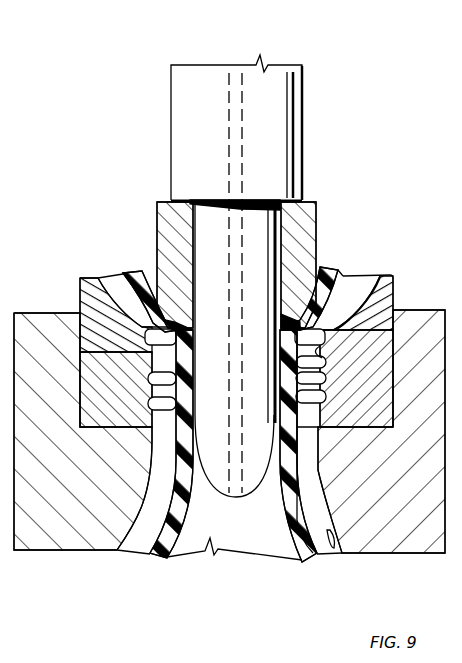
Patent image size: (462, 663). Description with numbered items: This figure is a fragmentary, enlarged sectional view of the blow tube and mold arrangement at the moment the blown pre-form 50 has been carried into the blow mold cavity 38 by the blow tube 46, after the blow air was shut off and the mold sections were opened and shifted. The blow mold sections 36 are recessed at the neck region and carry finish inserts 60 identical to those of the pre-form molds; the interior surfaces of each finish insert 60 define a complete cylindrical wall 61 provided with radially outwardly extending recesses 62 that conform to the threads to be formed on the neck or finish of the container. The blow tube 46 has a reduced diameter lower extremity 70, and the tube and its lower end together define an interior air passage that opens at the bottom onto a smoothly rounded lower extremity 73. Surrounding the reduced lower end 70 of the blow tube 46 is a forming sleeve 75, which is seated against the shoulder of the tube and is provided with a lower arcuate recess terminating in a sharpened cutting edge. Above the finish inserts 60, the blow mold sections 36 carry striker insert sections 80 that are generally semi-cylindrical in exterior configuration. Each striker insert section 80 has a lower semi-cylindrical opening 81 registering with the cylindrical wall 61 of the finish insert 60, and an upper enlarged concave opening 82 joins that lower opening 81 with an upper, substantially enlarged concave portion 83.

The blow mold sections 36 is at (425, 318).
The blow mold cavity 38 is at (332, 542).
The blow tube 46 is at (302, 112).
The blown pre-form 50 is at (163, 557).
The finish inserts 60 is at (120, 396).
The cylindrical wall 61 is at (172, 384).
The recesses 62 is at (330, 347).
The reduced diameter lower extremity 70 is at (205, 238).
The smoothly rounded lower extremity 73 is at (250, 492).
The forming sleeve 75 is at (300, 224).
The striker insert sections 80 is at (392, 282).
The lower semi-cylindrical opening 81 is at (345, 355).
The upper enlarged concave opening 82 is at (330, 346).
The upper enlarged concave portion 83 is at (375, 292).